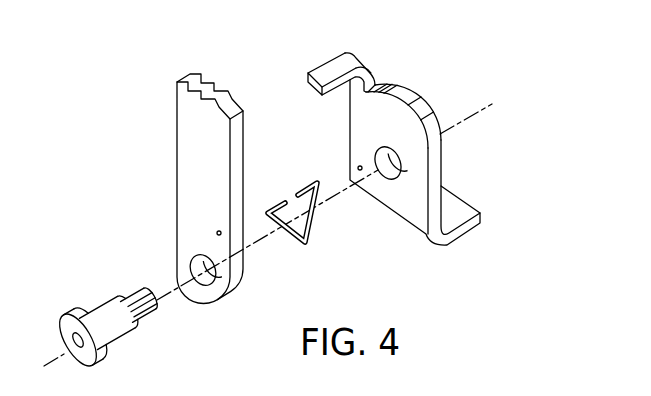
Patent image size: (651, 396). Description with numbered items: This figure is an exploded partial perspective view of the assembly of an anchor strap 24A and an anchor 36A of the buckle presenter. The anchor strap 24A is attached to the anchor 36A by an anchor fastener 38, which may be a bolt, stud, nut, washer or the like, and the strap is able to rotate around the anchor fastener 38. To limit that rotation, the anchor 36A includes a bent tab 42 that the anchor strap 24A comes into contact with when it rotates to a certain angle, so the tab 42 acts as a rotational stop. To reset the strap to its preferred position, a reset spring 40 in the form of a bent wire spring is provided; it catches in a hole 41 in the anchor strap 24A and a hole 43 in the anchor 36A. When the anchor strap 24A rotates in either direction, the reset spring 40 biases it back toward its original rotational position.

The anchor strap 24A is at (176, 153).
The anchor 36A is at (398, 112).
The anchor fastener 38 is at (102, 305).
The reset spring 40 is at (317, 217).
The hole 41 is at (219, 230).
The tab 42 is at (330, 59).
The hole 43 is at (360, 165).